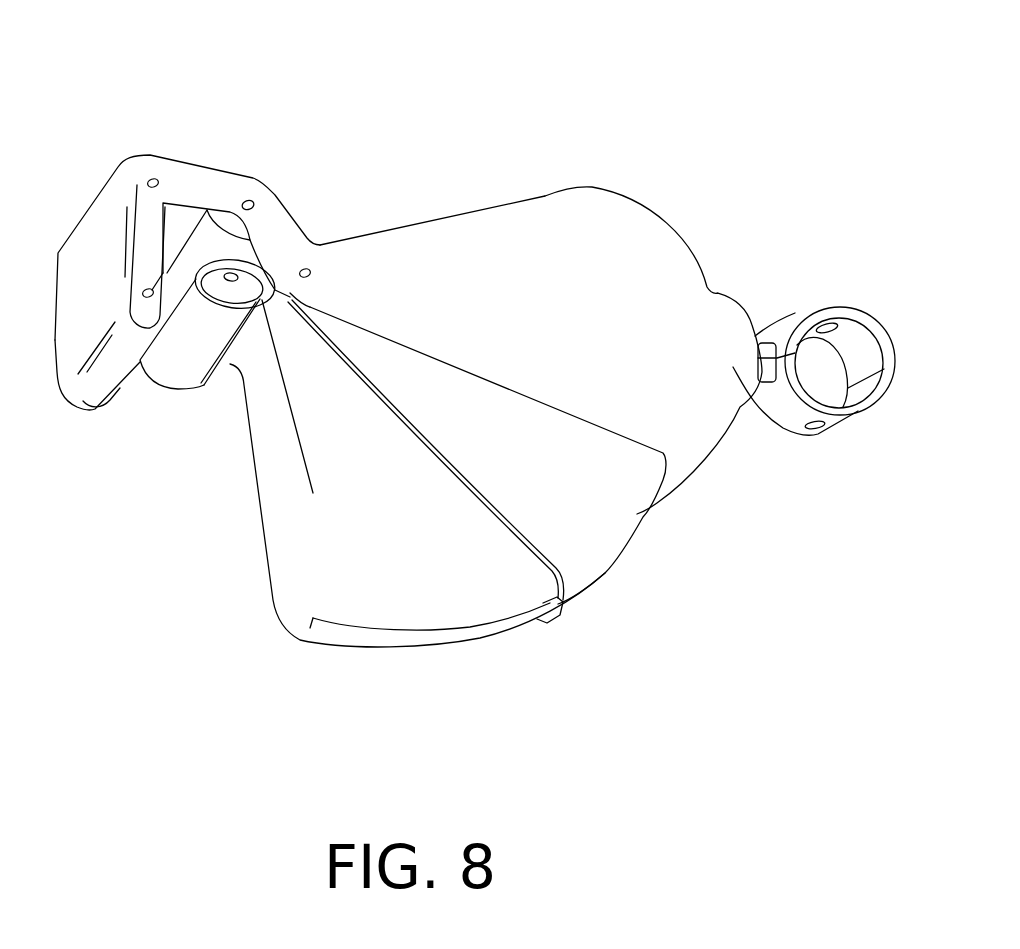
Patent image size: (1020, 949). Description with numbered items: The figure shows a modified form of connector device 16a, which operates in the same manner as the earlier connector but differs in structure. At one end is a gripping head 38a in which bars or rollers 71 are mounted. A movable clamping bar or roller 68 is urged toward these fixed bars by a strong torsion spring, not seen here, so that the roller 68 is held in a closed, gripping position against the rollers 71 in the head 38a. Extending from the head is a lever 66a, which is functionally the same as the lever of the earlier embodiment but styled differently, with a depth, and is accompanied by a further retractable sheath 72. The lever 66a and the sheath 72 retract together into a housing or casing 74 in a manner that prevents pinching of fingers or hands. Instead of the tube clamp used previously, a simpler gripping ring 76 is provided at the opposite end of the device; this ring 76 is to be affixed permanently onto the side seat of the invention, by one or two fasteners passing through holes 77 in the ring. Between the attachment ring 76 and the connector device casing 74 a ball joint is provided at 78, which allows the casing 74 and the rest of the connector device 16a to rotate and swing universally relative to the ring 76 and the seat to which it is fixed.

The gripping head 38a is at (193, 107).
The bars or rollers 71 is at (203, 242).
The clamping bar or roller 68 is at (185, 362).
The connector device 16a is at (602, 97).
The housing or casing 74 is at (535, 212).
The ball joint 78 is at (748, 303).
The gripping ring 76 is at (848, 308).
The holes 77 is at (814, 436).
The retractable sheath 72 is at (583, 560).
The lever 66a is at (292, 592).